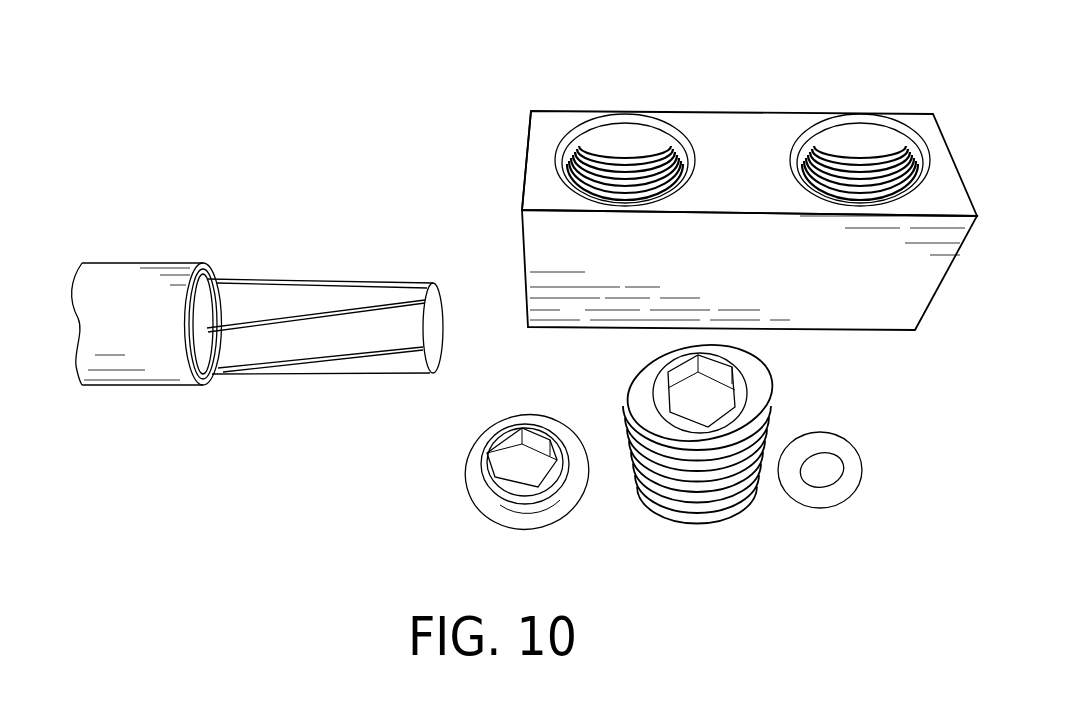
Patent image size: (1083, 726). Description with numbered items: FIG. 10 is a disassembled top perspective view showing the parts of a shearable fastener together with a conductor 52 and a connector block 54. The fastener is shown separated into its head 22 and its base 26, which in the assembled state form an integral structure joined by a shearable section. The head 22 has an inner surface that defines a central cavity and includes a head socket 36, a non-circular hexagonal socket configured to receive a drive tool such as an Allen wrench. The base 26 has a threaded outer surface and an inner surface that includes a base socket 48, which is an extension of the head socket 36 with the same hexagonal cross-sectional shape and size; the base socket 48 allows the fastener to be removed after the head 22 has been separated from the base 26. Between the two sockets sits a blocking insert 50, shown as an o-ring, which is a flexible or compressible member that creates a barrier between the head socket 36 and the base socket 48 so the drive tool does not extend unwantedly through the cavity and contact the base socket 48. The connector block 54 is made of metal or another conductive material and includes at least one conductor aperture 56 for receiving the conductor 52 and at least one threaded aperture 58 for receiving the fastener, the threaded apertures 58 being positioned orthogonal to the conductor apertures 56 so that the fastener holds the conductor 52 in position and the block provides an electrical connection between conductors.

The head 22 is at (461, 511).
The base 26 is at (686, 545).
The head socket 36 is at (508, 441).
The base socket 48 is at (737, 397).
The blocking insert 50 is at (869, 489).
The conductor 52 is at (348, 295).
The connector block 54 is at (745, 155).
The conductor aperture 56 is at (521, 179).
The threaded aperture 58 is at (615, 150).